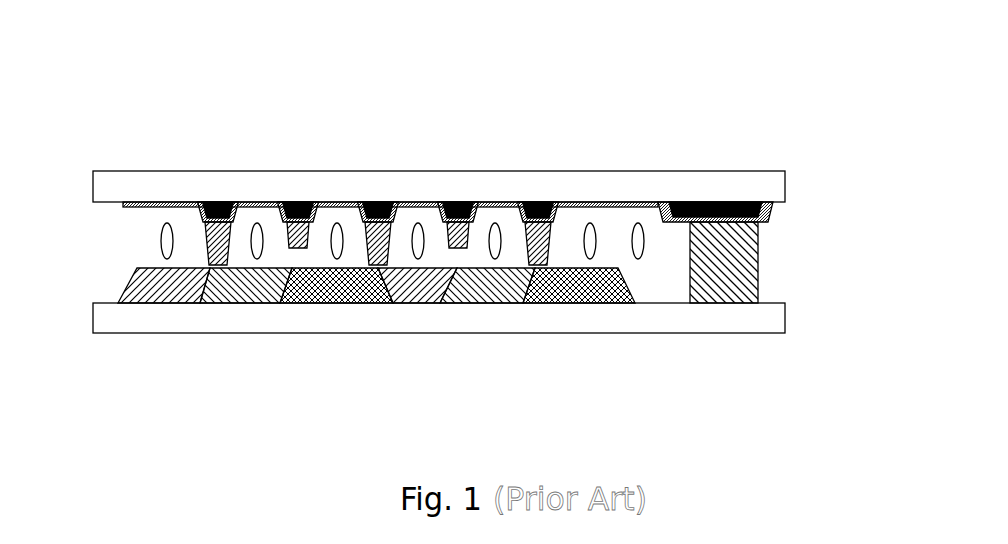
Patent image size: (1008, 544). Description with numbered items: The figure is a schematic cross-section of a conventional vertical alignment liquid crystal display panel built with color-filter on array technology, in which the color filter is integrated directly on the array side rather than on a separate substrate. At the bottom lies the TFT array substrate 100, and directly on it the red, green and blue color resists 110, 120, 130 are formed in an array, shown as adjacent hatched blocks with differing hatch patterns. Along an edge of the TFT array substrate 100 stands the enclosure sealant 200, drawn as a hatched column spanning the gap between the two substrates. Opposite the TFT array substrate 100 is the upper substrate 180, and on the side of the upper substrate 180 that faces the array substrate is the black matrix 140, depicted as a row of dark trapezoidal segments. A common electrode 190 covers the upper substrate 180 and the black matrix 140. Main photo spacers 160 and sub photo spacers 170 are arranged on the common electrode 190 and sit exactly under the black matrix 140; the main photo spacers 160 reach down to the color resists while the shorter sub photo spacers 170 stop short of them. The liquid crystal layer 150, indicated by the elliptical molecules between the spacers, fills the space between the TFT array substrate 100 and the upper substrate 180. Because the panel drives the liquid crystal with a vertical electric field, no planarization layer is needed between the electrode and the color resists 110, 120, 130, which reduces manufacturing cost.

The TFT array substrate 100 is at (785, 318).
The red color resist 110 is at (163, 288).
The green color resist 120 is at (237, 288).
The blue color resist 130 is at (327, 288).
The black matrix 140 is at (373, 202).
The liquid crystal layer 150 is at (590, 242).
The main photo spacer 160 is at (207, 243).
The sub photo spacer 170 is at (287, 205).
The upper substrate 180 is at (785, 187).
The common electrode 190 is at (768, 215).
The enclosure sealant 200 is at (728, 268).